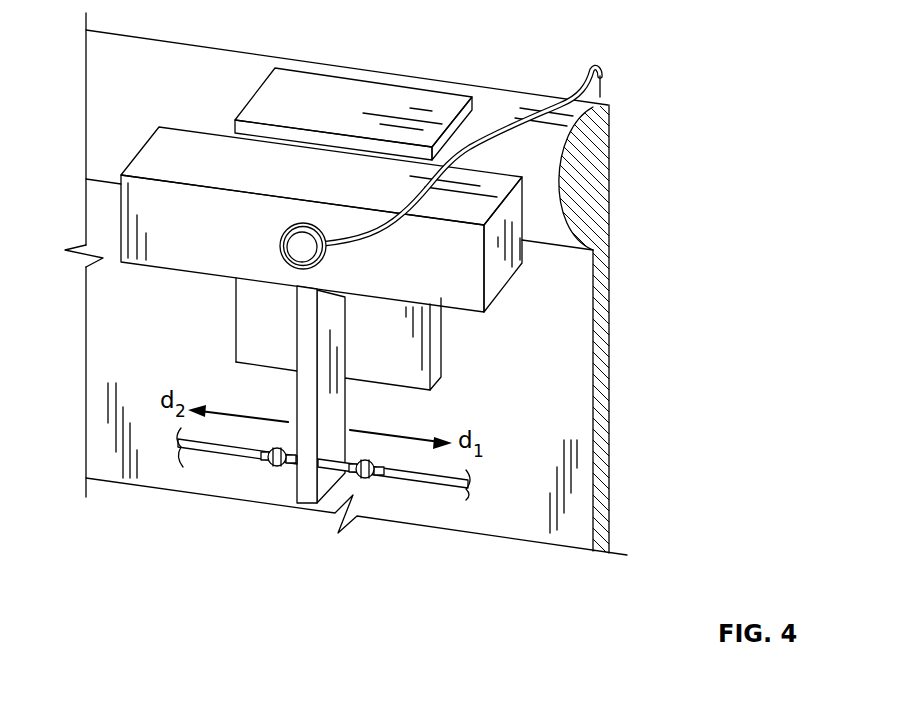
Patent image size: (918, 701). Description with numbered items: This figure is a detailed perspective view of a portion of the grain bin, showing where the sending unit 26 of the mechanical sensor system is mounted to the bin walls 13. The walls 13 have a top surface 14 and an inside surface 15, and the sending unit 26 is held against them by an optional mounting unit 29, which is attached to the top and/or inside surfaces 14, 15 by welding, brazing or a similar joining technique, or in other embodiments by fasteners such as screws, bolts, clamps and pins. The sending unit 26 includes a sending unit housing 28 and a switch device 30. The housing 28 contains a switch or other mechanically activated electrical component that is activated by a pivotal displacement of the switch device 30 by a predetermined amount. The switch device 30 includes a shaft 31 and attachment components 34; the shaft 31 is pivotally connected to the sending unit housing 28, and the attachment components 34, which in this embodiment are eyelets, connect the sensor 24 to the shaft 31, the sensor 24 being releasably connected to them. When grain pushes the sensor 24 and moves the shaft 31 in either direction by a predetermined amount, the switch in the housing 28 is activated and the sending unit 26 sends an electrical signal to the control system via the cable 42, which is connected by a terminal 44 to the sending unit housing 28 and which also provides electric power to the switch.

The walls 13 is at (610, 348).
The top surface 14 is at (540, 93).
The inside surface 15 is at (570, 405).
The sensor 24 is at (404, 482).
The sending unit 26 is at (281, 200).
The sending unit housing 28 is at (463, 312).
The mounting unit 29 is at (236, 325).
The switch device 30 is at (290, 399).
The shaft 31 is at (347, 397).
The attachment components 34 is at (273, 468).
The cable 42 is at (488, 130).
The terminal 44 is at (303, 248).